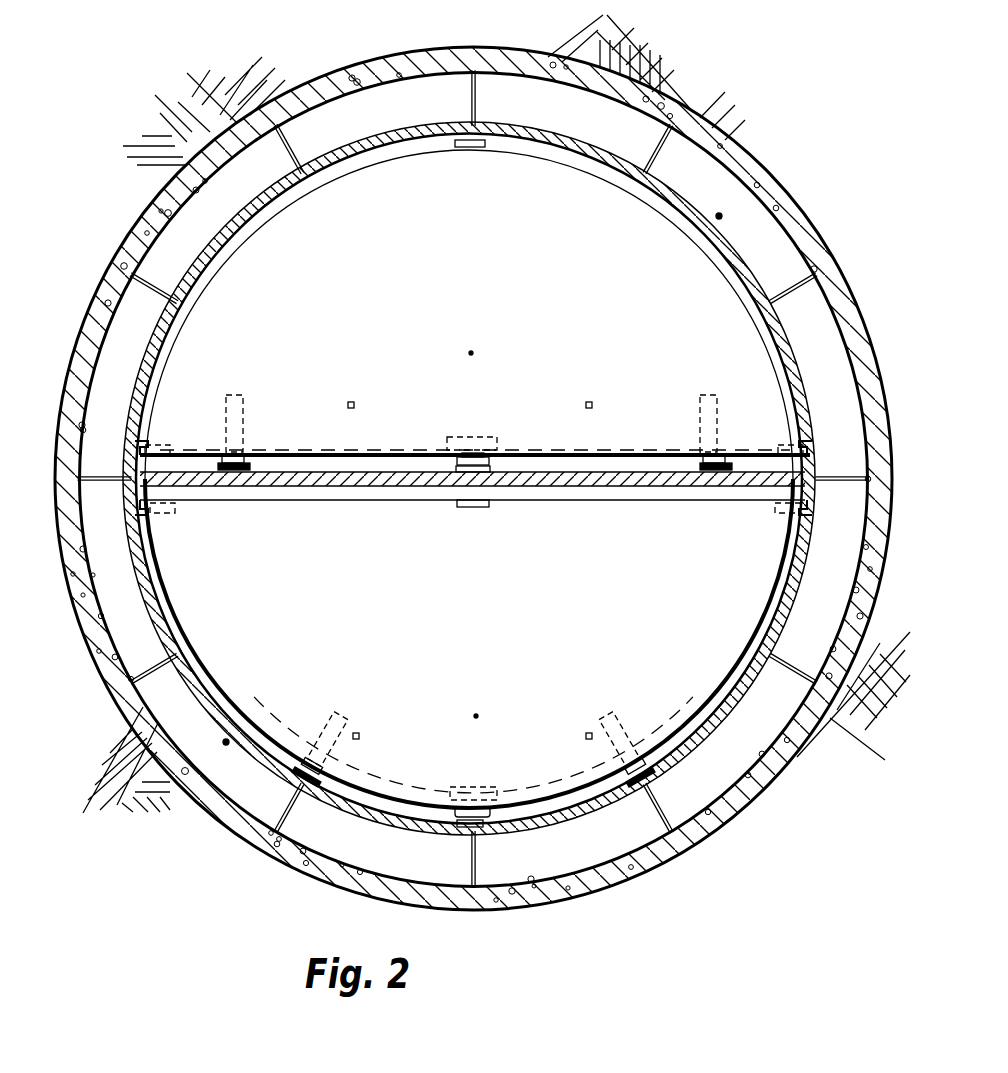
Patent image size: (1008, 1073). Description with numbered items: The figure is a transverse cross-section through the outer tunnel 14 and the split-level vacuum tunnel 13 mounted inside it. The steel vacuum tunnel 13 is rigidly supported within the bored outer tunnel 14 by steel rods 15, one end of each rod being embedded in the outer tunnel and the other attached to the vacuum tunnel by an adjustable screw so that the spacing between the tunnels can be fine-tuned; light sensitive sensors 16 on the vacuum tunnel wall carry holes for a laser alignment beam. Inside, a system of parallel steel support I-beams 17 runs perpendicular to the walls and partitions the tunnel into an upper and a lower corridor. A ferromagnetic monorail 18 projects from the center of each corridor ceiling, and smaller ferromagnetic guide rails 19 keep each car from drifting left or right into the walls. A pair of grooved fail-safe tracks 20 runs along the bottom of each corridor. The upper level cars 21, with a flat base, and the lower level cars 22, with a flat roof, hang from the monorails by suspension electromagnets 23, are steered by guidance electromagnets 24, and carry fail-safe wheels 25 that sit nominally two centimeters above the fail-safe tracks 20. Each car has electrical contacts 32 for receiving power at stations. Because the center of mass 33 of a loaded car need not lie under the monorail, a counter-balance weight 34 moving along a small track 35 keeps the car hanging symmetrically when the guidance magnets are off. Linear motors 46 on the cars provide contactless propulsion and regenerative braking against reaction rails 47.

The split-level vacuum tunnel 13 is at (810, 332).
The outer tunnel 14 is at (832, 345).
The steel rods 15 is at (150, 232).
The light sensitive sensors 16 is at (722, 215).
The steel support I-beams 17 is at (130, 482).
The ferromagnetic monorail 18 is at (512, 130).
The guide rails 19 is at (812, 420).
The fail-safe tracks 20 is at (252, 470).
The upper level cars 21 is at (365, 155).
The lower level cars 22 is at (782, 632).
The suspension electromagnets 23 is at (457, 148).
The guidance electromagnets 24 is at (170, 446).
The fail-safe wheels 25 is at (240, 455).
The electrical contacts 32 is at (353, 405).
The center of mass 33 is at (475, 352).
The counter-balance weight 34 is at (478, 442).
The small track 35 is at (422, 450).
The linear motors 46 is at (500, 446).
The reaction rails 47 is at (490, 487).